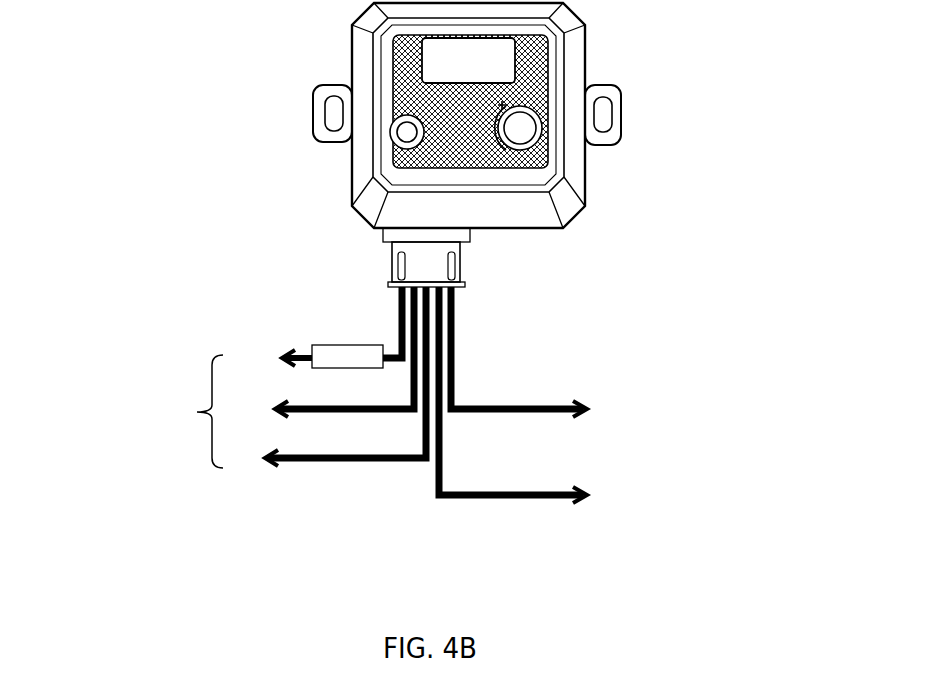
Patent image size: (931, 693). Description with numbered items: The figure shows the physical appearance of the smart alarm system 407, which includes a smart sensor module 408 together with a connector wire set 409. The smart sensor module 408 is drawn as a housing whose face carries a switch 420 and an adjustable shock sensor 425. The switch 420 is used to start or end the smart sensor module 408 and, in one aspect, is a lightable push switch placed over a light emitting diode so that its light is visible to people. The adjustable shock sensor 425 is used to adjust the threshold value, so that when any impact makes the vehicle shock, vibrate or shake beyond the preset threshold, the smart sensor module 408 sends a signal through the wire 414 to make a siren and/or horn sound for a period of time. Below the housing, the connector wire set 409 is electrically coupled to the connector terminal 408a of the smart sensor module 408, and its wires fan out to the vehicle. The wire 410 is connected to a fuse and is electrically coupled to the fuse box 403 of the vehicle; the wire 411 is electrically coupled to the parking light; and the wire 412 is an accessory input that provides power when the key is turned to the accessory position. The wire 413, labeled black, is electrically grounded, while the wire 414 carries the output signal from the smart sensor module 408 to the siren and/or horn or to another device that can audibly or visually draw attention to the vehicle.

The smart alarm system 407 is at (397, 592).
The smart sensor module 408 is at (575, 191).
The connector terminal 408a is at (463, 231).
The connector wire set 409 is at (392, 277).
The wire 410 is at (315, 328).
The wire 411 is at (320, 352).
The wire 412 is at (325, 377).
The wire 413 is at (547, 512).
The wire 414 is at (450, 390).
The switch 420 is at (392, 141).
The adjustable shock sensor 425 is at (536, 133).
The fuse box 403 is at (134, 411).